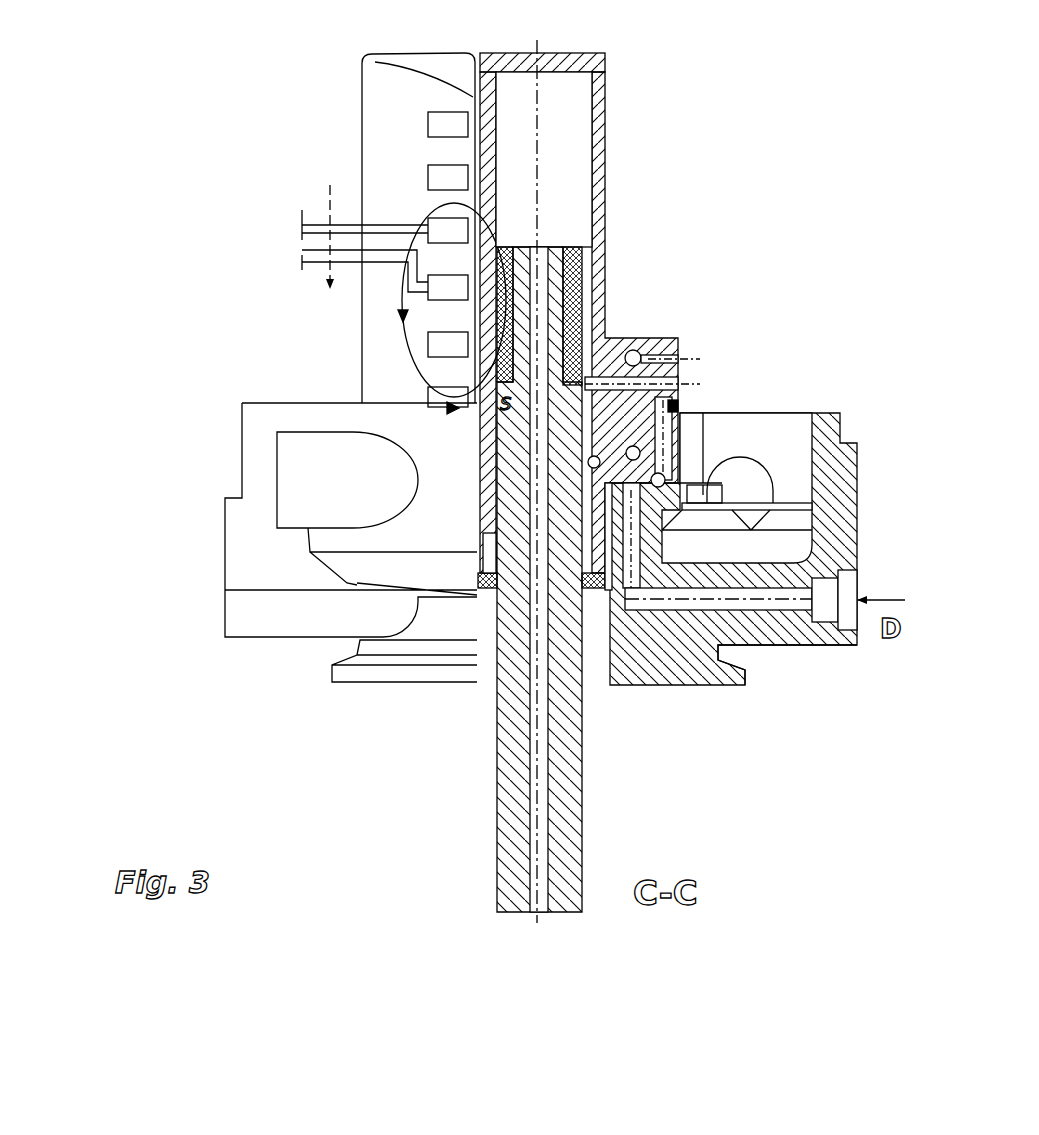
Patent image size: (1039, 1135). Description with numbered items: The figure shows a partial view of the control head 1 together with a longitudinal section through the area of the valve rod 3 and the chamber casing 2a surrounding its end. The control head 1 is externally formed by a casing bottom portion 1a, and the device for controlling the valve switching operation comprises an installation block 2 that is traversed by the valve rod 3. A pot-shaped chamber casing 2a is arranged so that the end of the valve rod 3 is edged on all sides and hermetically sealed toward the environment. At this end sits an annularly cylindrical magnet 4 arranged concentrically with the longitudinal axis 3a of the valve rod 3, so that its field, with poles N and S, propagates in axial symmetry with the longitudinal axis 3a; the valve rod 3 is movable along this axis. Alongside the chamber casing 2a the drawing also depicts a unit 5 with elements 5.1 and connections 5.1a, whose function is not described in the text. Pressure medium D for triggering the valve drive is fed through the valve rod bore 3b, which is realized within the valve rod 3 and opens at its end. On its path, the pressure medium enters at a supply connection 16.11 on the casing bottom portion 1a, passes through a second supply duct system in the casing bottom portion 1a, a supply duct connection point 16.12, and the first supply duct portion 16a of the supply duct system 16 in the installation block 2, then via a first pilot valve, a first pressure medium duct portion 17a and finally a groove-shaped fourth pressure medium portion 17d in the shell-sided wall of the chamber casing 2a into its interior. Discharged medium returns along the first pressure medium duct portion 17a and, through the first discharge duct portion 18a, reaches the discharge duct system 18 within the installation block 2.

The control head 1 is at (212, 552).
The casing bottom portion 1a is at (833, 535).
The installation block 2 is at (612, 199).
The chamber casing 2a is at (600, 97).
The valve rod 3 is at (567, 757).
The longitudinal axis 3a is at (538, 778).
The valve rod bore 3b is at (528, 797).
The magnet 4 is at (577, 262).
The electromagnet 5 is at (358, 78).
The coil windings 5.1 is at (404, 127).
The coil leads 5.1a is at (452, 288).
The supply duct system 16 is at (633, 358).
The first supply duct portion 16a is at (672, 360).
The supply connection 16.11 is at (765, 598).
The supply duct connection point 16.12 is at (748, 657).
The first pressure medium duct portion 17a is at (672, 385).
The fourth pressure medium portion 17d is at (587, 168).
The discharge duct system 18 is at (658, 480).
The first discharge duct portion 18a is at (672, 404).